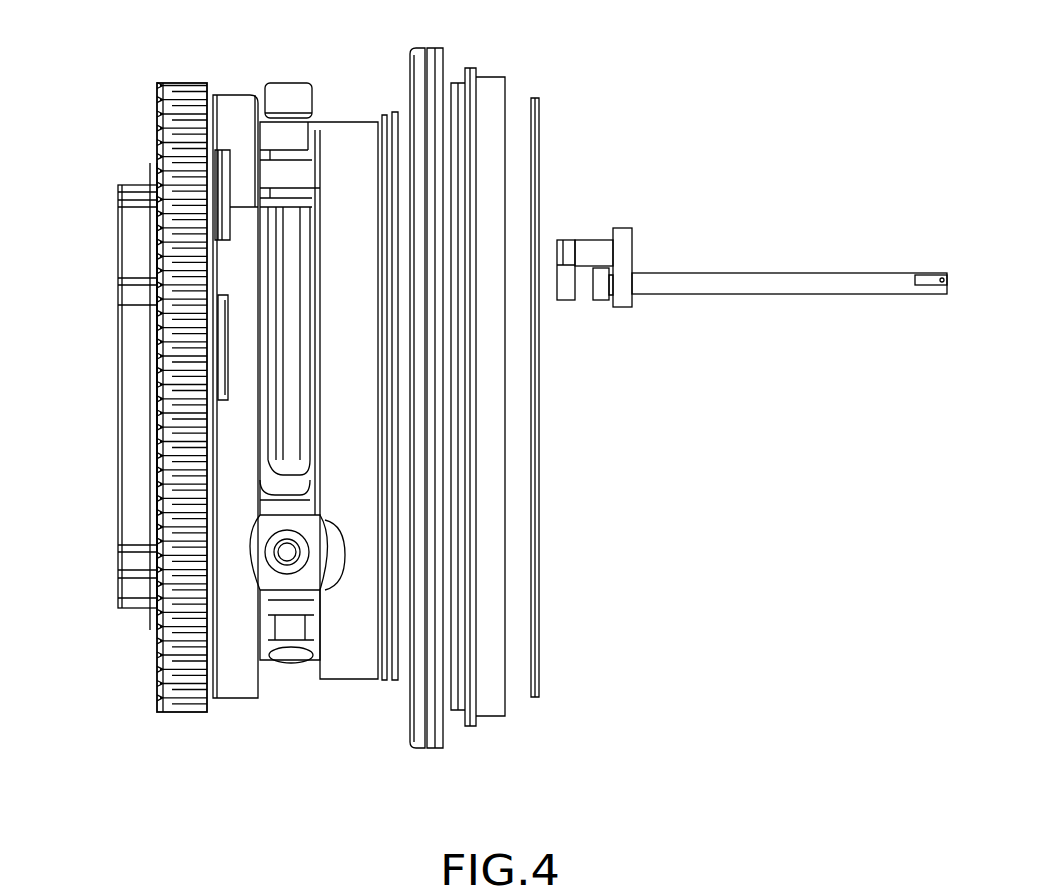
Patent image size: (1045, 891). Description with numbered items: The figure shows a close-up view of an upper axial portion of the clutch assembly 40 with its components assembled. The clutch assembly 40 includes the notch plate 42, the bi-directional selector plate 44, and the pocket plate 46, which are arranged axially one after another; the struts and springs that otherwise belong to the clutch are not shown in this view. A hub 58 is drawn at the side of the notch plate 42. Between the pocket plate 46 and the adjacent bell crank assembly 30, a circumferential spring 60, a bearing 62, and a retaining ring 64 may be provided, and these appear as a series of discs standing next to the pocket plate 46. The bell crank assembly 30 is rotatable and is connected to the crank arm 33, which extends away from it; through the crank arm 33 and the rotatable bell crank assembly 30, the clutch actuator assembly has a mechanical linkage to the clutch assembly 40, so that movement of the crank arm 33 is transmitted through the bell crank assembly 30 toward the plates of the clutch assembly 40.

The bell crank assembly 30 is at (650, 248).
The crank arm 33 is at (849, 284).
The clutch assembly 40 is at (92, 184).
The notch plate 42 is at (188, 88).
The bi-directional selector plate 44 is at (238, 108).
The pocket plate 46 is at (332, 118).
The hub 58 is at (133, 436).
The circumferential spring 60 is at (440, 750).
The bearing 62 is at (478, 98).
The retaining ring 64 is at (542, 600).